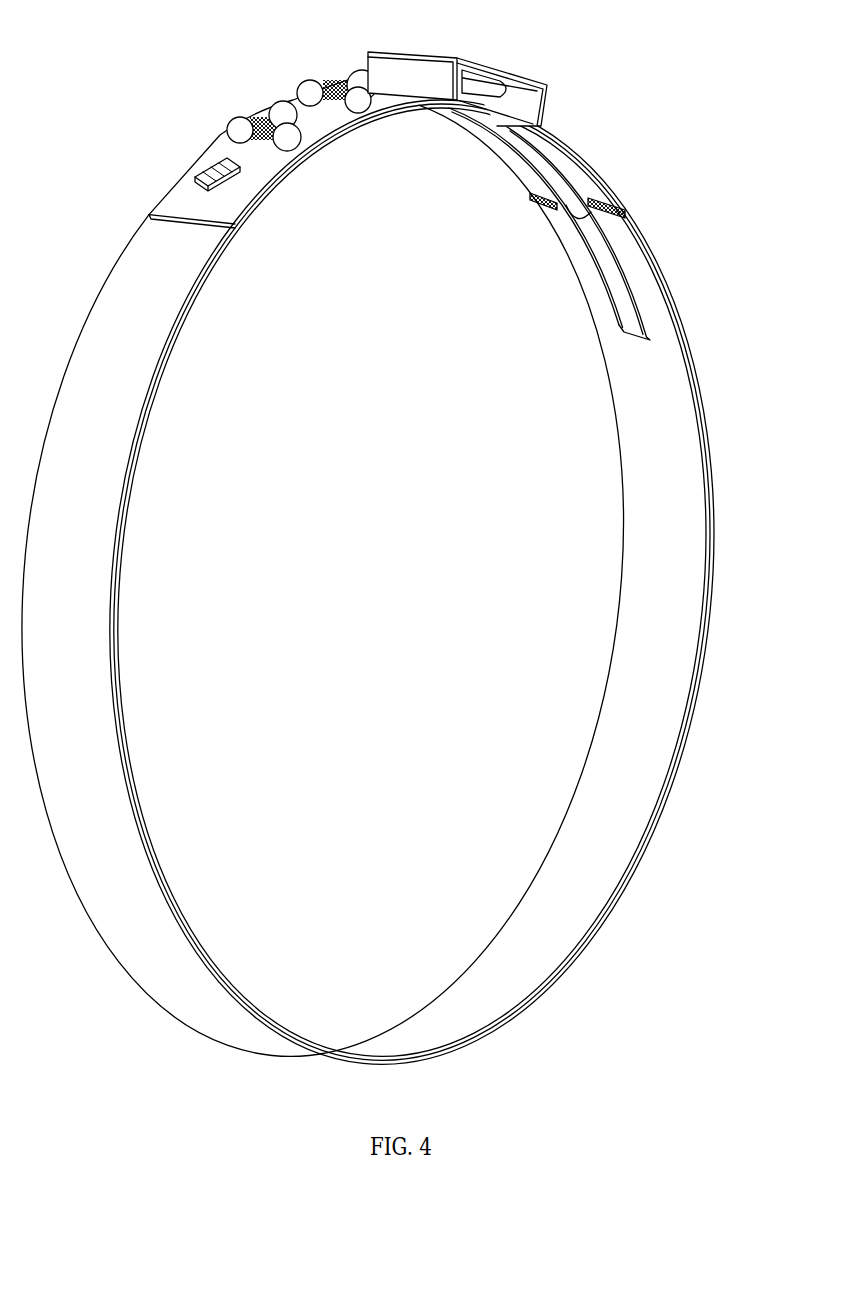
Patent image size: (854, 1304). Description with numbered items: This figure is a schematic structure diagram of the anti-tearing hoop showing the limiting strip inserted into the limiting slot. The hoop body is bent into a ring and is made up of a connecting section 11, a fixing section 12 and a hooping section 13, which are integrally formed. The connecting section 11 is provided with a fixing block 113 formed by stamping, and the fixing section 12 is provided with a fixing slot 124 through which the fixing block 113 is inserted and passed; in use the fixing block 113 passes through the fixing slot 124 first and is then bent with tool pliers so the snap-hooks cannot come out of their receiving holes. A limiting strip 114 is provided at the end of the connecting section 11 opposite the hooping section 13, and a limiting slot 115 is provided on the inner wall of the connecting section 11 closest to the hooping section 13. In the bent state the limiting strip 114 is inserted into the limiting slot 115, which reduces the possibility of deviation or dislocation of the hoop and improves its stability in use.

The connecting section 11 is at (190, 298).
The fixing section 12 is at (150, 213).
The hooping section 13 is at (388, 52).
The fixing block 113 is at (207, 170).
The limiting strip 114 is at (565, 189).
The limiting slot 115 is at (632, 307).
The fixing slot 124 is at (220, 160).